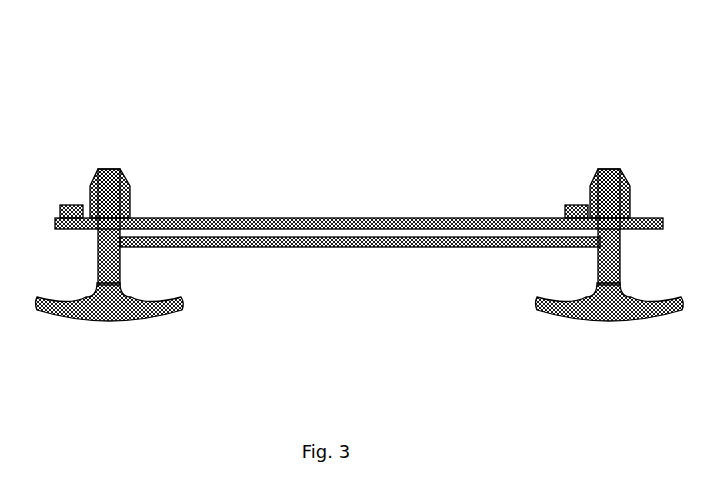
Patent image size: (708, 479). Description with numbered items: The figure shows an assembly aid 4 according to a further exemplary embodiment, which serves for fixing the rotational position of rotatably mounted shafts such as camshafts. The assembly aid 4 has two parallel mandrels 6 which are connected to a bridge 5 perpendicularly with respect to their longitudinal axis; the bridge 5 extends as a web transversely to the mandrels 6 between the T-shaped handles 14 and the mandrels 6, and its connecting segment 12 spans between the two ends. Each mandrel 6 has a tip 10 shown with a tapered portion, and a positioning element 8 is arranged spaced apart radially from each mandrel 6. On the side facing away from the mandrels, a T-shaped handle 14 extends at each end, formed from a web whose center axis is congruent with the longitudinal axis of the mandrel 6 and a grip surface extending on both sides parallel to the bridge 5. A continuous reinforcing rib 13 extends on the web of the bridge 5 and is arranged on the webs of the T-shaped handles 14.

The assembly aid 4 is at (359, 212).
The bridge 5 is at (359, 176).
The connecting segment 12 is at (254, 218).
The reinforcing rib 13 is at (415, 247).
The tip 10 is at (108, 169).
The mandrel 6 is at (124, 181).
The positioning element 8 is at (73, 204).
The T-shaped handle 14 is at (145, 318).